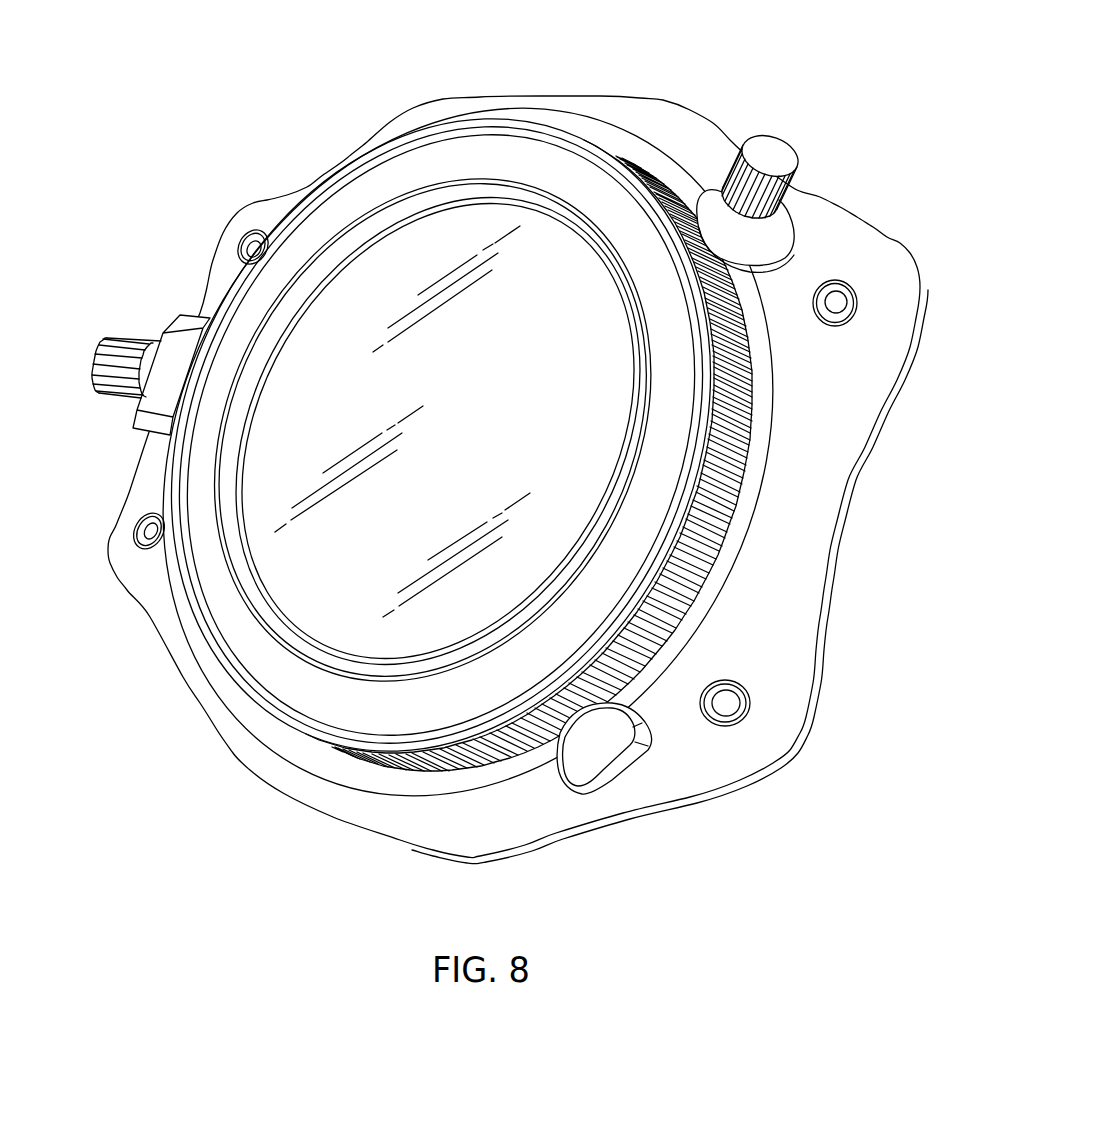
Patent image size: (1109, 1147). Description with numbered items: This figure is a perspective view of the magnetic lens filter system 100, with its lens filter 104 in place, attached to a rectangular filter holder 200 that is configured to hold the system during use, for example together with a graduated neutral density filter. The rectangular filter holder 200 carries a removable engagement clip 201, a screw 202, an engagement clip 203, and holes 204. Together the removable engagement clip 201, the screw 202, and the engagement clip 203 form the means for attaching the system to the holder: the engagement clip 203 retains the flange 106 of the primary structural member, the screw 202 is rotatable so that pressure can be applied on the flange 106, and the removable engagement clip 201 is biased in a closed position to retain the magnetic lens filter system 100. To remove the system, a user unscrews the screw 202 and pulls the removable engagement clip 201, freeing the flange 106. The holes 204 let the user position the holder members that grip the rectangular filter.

The magnetic lens filter system 100 is at (299, 193).
The lens filter 104 is at (513, 400).
The flange 106 is at (733, 528).
The rectangular filter holder 200 is at (705, 89).
The removable engagement clip 201 is at (90, 357).
The screw 202 is at (795, 230).
The engagement clip 203 is at (650, 748).
The holes 204 is at (858, 305).